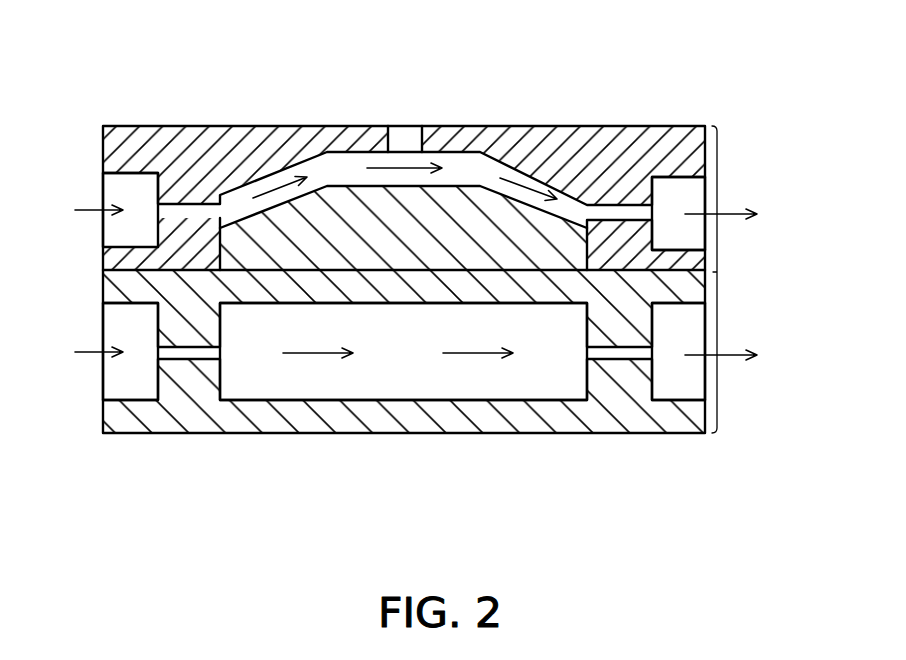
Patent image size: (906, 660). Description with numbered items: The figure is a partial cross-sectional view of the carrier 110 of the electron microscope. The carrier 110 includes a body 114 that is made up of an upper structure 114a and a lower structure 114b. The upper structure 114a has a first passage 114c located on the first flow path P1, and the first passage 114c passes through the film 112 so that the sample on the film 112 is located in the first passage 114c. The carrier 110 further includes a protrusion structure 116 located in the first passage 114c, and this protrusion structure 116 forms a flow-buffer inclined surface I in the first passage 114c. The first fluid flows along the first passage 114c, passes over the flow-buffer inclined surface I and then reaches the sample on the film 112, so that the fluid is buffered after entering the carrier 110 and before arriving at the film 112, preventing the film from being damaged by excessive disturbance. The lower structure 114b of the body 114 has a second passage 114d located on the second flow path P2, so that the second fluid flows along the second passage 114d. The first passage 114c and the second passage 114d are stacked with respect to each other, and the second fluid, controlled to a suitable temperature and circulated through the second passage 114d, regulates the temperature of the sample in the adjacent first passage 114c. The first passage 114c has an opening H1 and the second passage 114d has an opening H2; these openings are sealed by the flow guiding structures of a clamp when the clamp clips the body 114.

The carrier 110 is at (113, 92).
The film 112 is at (410, 132).
The body 114 is at (808, 243).
The upper structure 114a is at (717, 228).
The lower structure 114b is at (717, 345).
The first passage 114c is at (272, 174).
The second passage 114d is at (267, 413).
The protrusion structure 116 is at (237, 248).
The opening H1 is at (136, 161).
The opening H2 is at (145, 412).
The first flow path P1 is at (85, 205).
The second flow path P2 is at (85, 347).
The flow-buffer inclined surface I is at (311, 194).